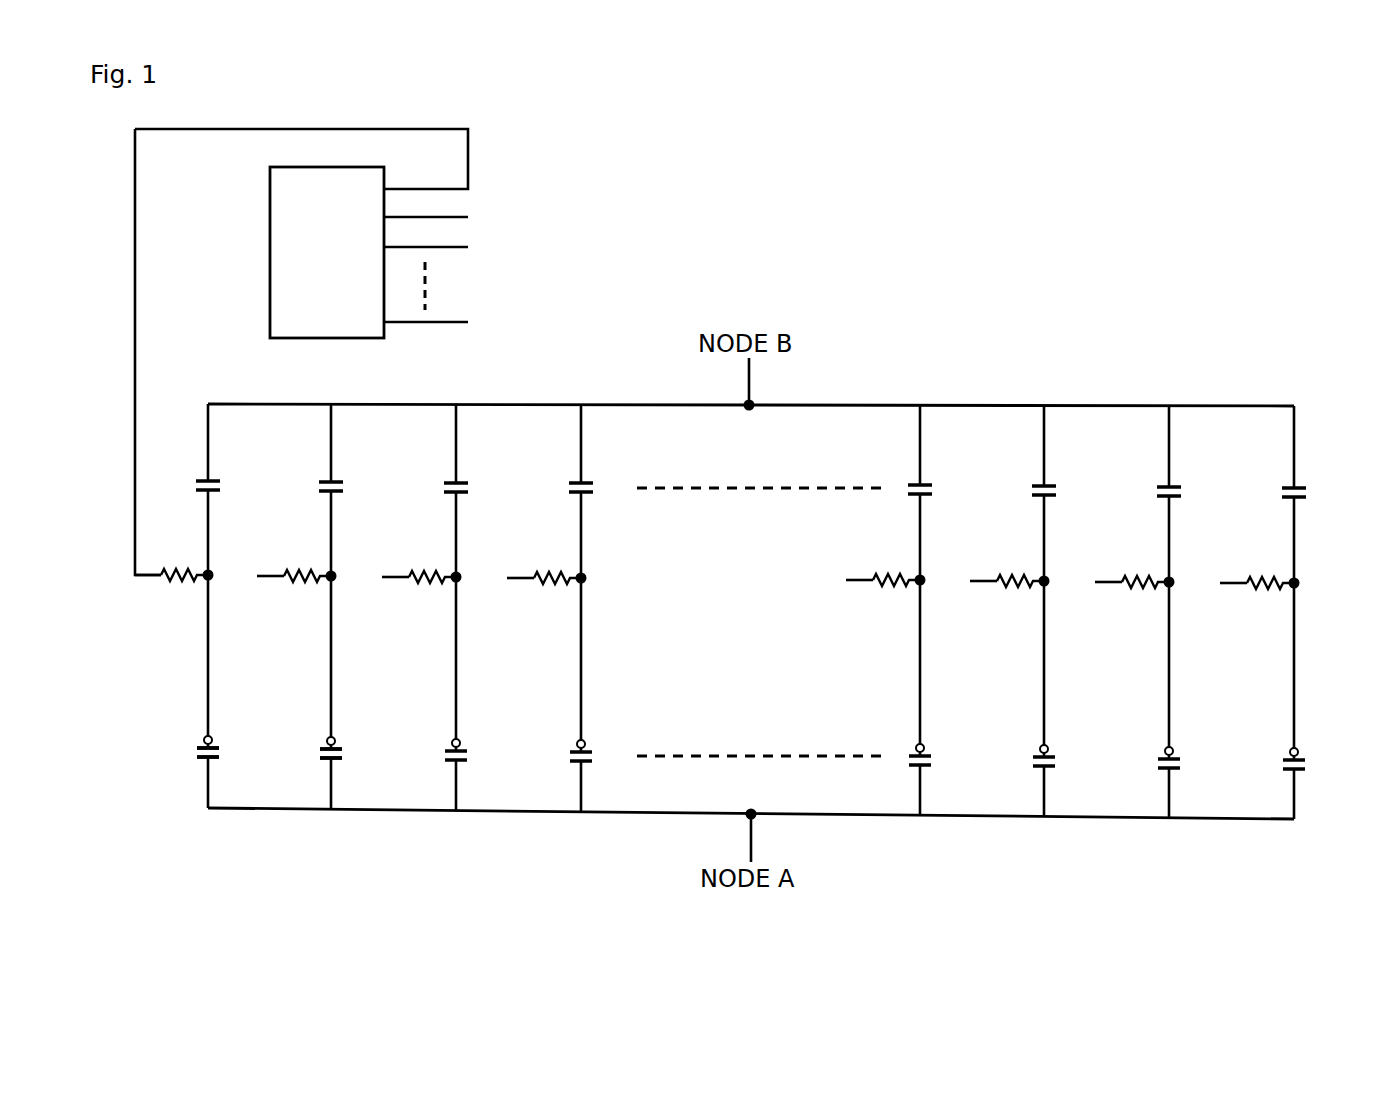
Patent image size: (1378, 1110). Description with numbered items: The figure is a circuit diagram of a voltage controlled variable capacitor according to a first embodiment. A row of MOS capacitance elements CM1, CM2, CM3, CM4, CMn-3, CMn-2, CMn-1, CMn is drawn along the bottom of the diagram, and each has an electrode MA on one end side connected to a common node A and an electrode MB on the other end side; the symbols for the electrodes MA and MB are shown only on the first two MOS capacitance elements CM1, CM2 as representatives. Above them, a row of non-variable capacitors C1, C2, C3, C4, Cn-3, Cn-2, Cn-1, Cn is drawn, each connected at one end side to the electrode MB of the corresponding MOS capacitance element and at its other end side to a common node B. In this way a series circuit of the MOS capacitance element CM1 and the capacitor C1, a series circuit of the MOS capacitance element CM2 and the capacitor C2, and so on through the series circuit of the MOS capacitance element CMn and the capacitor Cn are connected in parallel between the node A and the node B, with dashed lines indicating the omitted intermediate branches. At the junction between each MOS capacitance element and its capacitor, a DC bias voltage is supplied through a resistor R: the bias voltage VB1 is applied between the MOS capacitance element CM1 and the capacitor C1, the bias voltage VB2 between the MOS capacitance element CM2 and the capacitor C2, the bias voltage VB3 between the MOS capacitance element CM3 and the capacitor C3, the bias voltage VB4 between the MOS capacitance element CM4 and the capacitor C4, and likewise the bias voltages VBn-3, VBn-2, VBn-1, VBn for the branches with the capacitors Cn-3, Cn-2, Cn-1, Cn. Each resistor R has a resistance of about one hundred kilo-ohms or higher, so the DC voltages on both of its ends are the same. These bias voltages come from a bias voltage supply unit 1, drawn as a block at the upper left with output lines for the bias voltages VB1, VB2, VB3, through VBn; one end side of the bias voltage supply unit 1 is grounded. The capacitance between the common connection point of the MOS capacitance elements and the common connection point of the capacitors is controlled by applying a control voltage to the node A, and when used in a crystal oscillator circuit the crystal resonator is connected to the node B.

The bias voltage supply unit 1 is at (270, 244).
The capacitor C1 is at (224, 570).
The capacitor C2 is at (347, 570).
The capacitor C3 is at (472, 571).
The capacitor C4 is at (597, 572).
The capacitor Cn-3 is at (946, 574).
The capacitor Cn-2 is at (1070, 575).
The capacitor Cn-1 is at (1195, 576).
The capacitor Cn is at (1310, 577).
The MOS capacitance element CM1 is at (228, 772).
The MOS capacitance element CM2 is at (351, 773).
The MOS capacitance element CM3 is at (476, 775).
The MOS capacitance element CM4 is at (601, 776).
The MOS capacitance element CMn-3 is at (950, 779).
The MOS capacitance element CMn-2 is at (1074, 781).
The MOS capacitance element CMn-1 is at (1199, 782).
The MOS capacitance element CMn is at (1314, 783).
The resistor R is at (730, 566).
The bias voltage VB1 is at (129, 591).
The bias voltage VB2 is at (254, 592).
The bias voltage VB3 is at (379, 593).
The bias voltage VB4 is at (504, 594).
The bias voltage VBn-3 is at (839, 596).
The bias voltage VBn-2 is at (963, 597).
The bias voltage VBn-1 is at (1088, 598).
The bias voltage VBn is at (1218, 599).
The electrode MB is at (328, 738).
The electrode MA is at (326, 759).